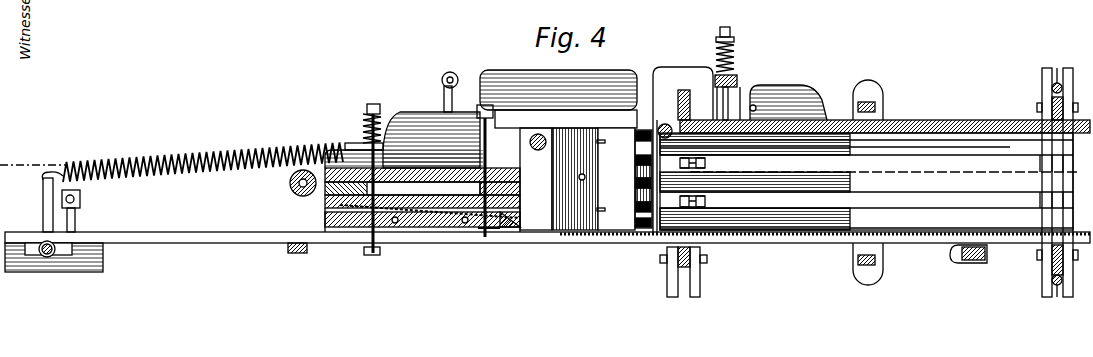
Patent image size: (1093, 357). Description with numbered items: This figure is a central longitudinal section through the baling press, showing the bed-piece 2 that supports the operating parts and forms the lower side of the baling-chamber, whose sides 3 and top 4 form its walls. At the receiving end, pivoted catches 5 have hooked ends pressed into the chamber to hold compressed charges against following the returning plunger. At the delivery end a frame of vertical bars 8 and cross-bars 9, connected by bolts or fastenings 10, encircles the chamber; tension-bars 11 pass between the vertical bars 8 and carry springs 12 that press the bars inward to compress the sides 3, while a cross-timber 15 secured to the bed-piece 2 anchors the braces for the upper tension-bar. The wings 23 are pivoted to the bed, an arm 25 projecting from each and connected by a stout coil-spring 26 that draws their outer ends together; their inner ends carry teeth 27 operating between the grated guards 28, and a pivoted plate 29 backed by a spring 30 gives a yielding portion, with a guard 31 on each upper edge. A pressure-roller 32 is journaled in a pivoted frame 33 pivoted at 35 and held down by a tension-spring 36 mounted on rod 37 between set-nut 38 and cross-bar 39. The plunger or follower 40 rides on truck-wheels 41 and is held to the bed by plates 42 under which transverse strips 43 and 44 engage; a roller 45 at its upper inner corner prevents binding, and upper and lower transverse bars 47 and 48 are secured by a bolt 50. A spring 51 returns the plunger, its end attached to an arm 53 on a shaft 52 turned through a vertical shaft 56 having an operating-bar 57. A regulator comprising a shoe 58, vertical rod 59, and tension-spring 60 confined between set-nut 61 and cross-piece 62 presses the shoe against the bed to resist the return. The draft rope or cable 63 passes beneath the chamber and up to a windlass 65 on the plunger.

The bed-piece 2 is at (195, 232).
The sides 3 is at (874, 181).
The top 4 is at (929, 120).
The pivoted catches 5 is at (705, 167).
The vertical bars 8 is at (1073, 290).
The cross-bars 9 is at (1063, 105).
The bolts or fastenings 10 is at (1037, 108).
The tension-bars 11 is at (1052, 89).
The springs 12 is at (1057, 83).
The cross-timber 15 is at (966, 262).
The wings 23 is at (575, 179).
The arm 25 is at (444, 100).
The coil-spring 26 is at (458, 78).
The teeth 27 is at (640, 165).
The guards 28 is at (638, 185).
The plate 29 is at (616, 179).
The spring 30 is at (590, 177).
The guard 31 is at (558, 99).
The pressure-roller 32 is at (664, 121).
The pivoted frame 33 is at (683, 150).
The pivot 35 is at (768, 100).
The tension-spring 36 is at (735, 56).
The rod 37 is at (733, 103).
The set-nut 38 is at (732, 33).
The cross-bar 39 is at (738, 80).
The plunger or follower 40 is at (422, 180).
The truck-wheels 41 is at (396, 240).
The plates 42 is at (425, 240).
The transverse strip 43 is at (365, 245).
The transverse strip 44 is at (500, 235).
The roller 45 is at (546, 142).
The upper transverse bar 47 is at (495, 113).
The lower transverse bar 48 is at (476, 235).
The bolt 50 is at (489, 162).
The spring 51 is at (213, 150).
The shaft 52 is at (47, 258).
The arm 53 is at (43, 218).
The vertical shaft 56 is at (75, 219).
The operating-bar 57 is at (80, 199).
The shoe 58 is at (372, 250).
The vertical rod 59 is at (360, 150).
The tension-spring 60 is at (363, 120).
The set-nut 61 is at (380, 108).
The cross-piece 62 is at (388, 138).
The draft rope or cable 63 is at (325, 210).
The windlass 65 is at (293, 193).